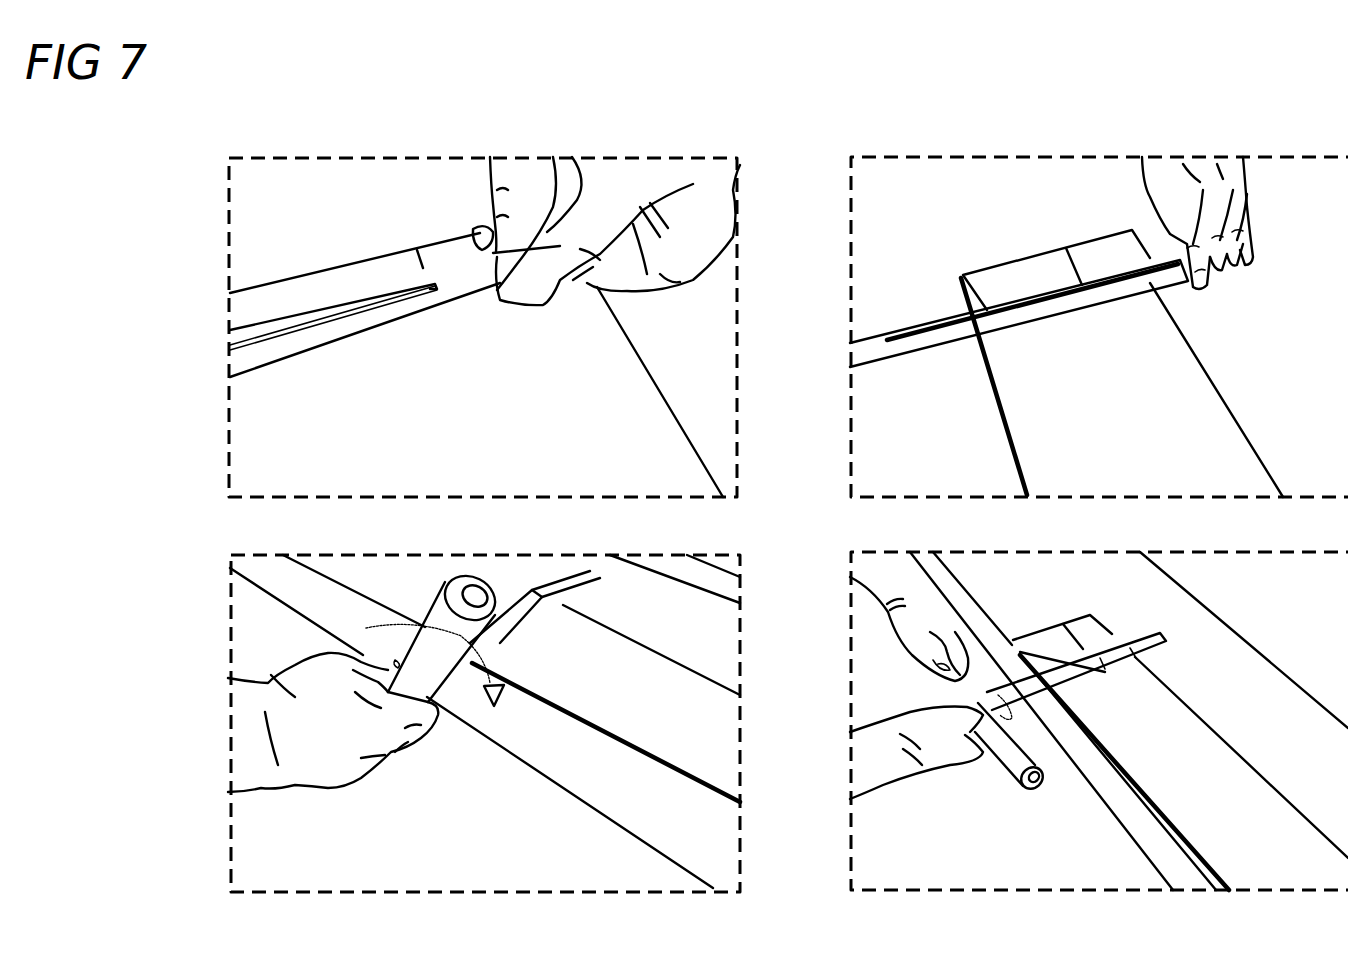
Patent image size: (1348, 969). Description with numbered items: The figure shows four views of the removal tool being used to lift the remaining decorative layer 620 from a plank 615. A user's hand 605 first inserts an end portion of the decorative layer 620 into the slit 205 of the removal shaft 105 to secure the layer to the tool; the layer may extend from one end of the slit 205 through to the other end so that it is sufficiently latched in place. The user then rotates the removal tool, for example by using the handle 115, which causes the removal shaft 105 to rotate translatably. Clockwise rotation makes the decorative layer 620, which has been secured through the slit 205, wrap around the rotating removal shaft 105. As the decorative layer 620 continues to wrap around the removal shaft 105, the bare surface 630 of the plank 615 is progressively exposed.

The removal shaft 105 is at (375, 331).
The slit 205 is at (362, 307).
The handle 115 is at (436, 655).
The hand 605 is at (490, 180).
The plank 615 is at (618, 321).
The decorative layer 620 is at (477, 280).
The bare surface 630 is at (440, 252).